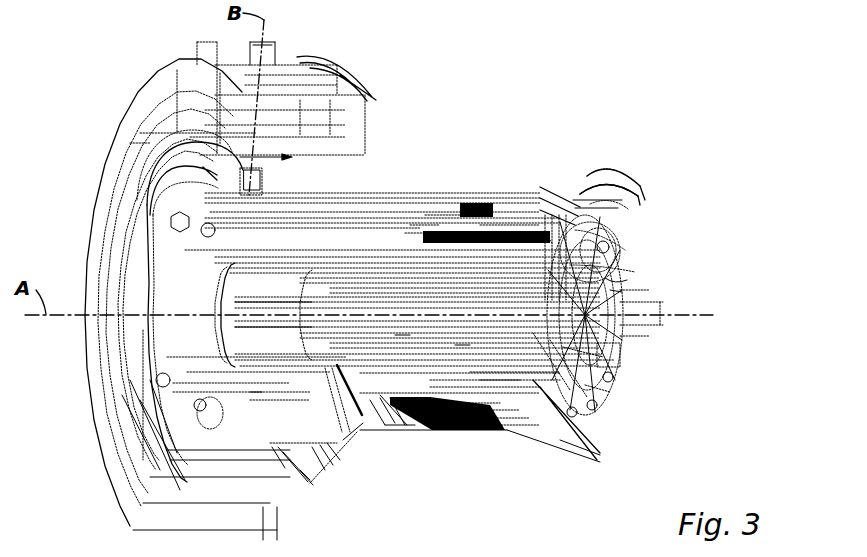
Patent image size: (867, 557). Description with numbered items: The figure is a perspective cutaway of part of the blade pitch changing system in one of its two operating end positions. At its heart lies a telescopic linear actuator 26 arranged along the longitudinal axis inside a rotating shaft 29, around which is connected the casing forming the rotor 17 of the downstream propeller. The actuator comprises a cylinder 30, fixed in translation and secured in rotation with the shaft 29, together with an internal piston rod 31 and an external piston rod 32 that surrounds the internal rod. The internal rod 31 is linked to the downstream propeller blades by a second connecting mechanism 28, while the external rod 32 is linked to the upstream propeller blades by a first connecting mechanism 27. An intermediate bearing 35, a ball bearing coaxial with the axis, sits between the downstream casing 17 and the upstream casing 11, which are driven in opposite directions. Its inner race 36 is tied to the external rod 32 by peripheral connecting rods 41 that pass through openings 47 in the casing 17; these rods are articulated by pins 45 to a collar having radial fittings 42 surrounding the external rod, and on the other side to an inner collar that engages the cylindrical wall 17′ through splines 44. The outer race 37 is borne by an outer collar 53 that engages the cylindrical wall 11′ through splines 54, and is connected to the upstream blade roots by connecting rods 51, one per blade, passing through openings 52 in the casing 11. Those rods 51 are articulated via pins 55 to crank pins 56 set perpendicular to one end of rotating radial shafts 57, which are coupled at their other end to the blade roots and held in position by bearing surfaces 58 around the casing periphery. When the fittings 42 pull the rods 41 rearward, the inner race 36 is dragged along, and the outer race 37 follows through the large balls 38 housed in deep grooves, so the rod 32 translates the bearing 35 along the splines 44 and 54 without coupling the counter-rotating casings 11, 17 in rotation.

The rotating casing of the upstream propeller 11 is at (310, 480).
The cylindrical wall of the rotating casing 11 11′ is at (447, 433).
The rotating casing (rotor) of the downstream propeller 17 is at (592, 455).
The cylindrical wall of the rotating casing 17 17′ is at (490, 372).
The linear actuator 26 is at (310, 324).
The first connecting mechanism 27 is at (634, 239).
The second connecting mechanism 28 is at (174, 248).
The rotating shaft 29 is at (203, 265).
The cylinder 30 is at (462, 345).
The internal piston rod 31 is at (402, 335).
The external piston rod 32 is at (518, 368).
The intermediate bearing 35 is at (446, 195).
The inner race 36 is at (420, 225).
The outer race 37 is at (437, 228).
The balls 38 is at (457, 230).
The peripheral connecting rods 41 is at (563, 178).
The collar having radial fittings 42 is at (607, 357).
The splines 44 is at (517, 228).
The pins 45 is at (627, 278).
The openings 47 is at (571, 205).
The connecting rods 51 is at (255, 395).
The openings 52 is at (347, 425).
The outer collar 53 is at (400, 430).
The splines 54 is at (497, 228).
The pins 55 is at (160, 388).
The crank pins 56 is at (188, 399).
The rotating radial shafts 57 is at (248, 165).
The bearing surfaces 58 is at (200, 420).